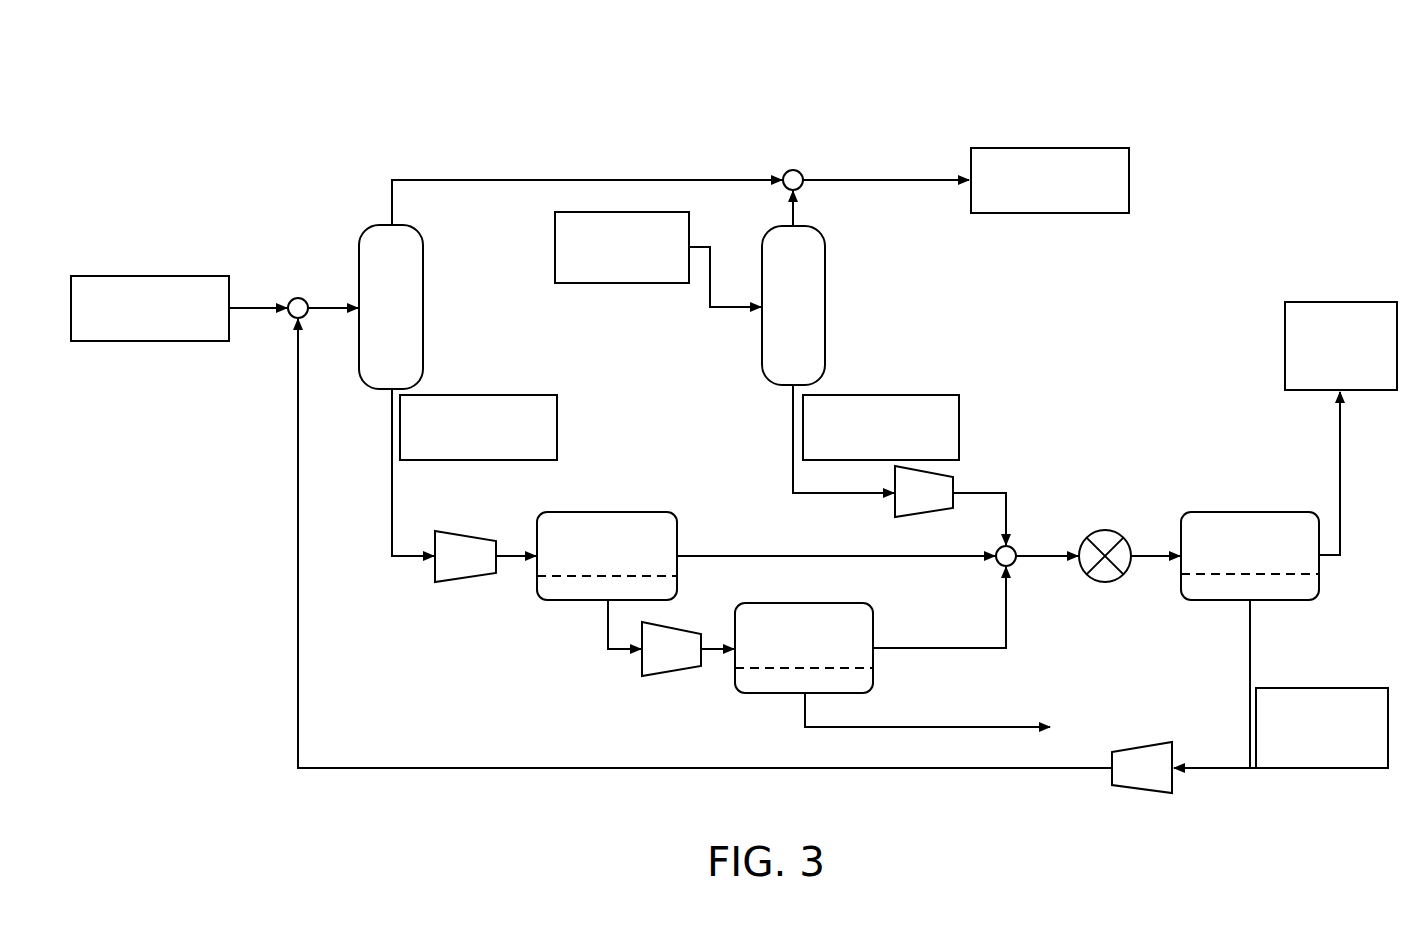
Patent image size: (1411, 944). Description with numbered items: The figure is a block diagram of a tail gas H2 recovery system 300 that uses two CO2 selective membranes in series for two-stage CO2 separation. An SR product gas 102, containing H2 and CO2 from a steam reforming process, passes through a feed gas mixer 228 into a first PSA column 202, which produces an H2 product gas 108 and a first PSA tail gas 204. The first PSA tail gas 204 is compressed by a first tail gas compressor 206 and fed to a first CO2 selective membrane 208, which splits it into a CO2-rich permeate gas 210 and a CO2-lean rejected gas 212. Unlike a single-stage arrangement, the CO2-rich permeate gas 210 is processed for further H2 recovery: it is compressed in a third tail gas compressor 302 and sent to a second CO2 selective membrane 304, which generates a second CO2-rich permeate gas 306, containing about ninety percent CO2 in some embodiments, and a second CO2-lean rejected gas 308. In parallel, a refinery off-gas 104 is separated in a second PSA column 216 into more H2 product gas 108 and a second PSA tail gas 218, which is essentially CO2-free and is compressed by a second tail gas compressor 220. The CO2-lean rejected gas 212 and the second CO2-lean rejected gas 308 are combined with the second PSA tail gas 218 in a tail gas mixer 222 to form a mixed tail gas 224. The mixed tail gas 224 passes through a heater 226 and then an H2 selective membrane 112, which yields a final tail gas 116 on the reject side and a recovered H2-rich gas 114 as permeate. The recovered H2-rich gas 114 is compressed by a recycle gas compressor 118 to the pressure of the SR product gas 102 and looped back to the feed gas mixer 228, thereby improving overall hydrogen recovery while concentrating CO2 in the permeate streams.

The tail gas H2 recovery system 300 is at (1292, 116).
The SR product gas 102 is at (145, 276).
The feed gas mixer 228 is at (298, 297).
The first PSA column 202 is at (424, 271).
The first PSA tail gas 204 is at (527, 395).
The first tail gas compressor 206 is at (465, 582).
The first CO2 selective membrane 208 is at (612, 512).
The CO2-rich permeate gas 210 is at (608, 628).
The CO2-lean rejected gas 212 is at (840, 556).
The third tail gas compressor 302 is at (672, 676).
The second CO2 selective membrane 304 is at (812, 603).
The second CO2-rich permeate gas 306 is at (937, 728).
The second CO2-lean rejected gas 308 is at (945, 650).
The refinery off-gas 104 is at (614, 284).
The second PSA column 216 is at (825, 275).
The second PSA tail gas 218 is at (924, 395).
The second tail gas compressor 220 is at (920, 517).
The tail gas mixer 222 is at (1016, 548).
The mixed tail gas 224 is at (1035, 560).
The heater 226 is at (1105, 530).
The H2 product gas 108 is at (1050, 148).
The H2 selective membrane 112 is at (1297, 600).
The final tail gas 116 is at (1340, 302).
The recovered H2-rich gas 114 is at (1325, 768).
The recycle gas compressor 118 is at (1130, 790).